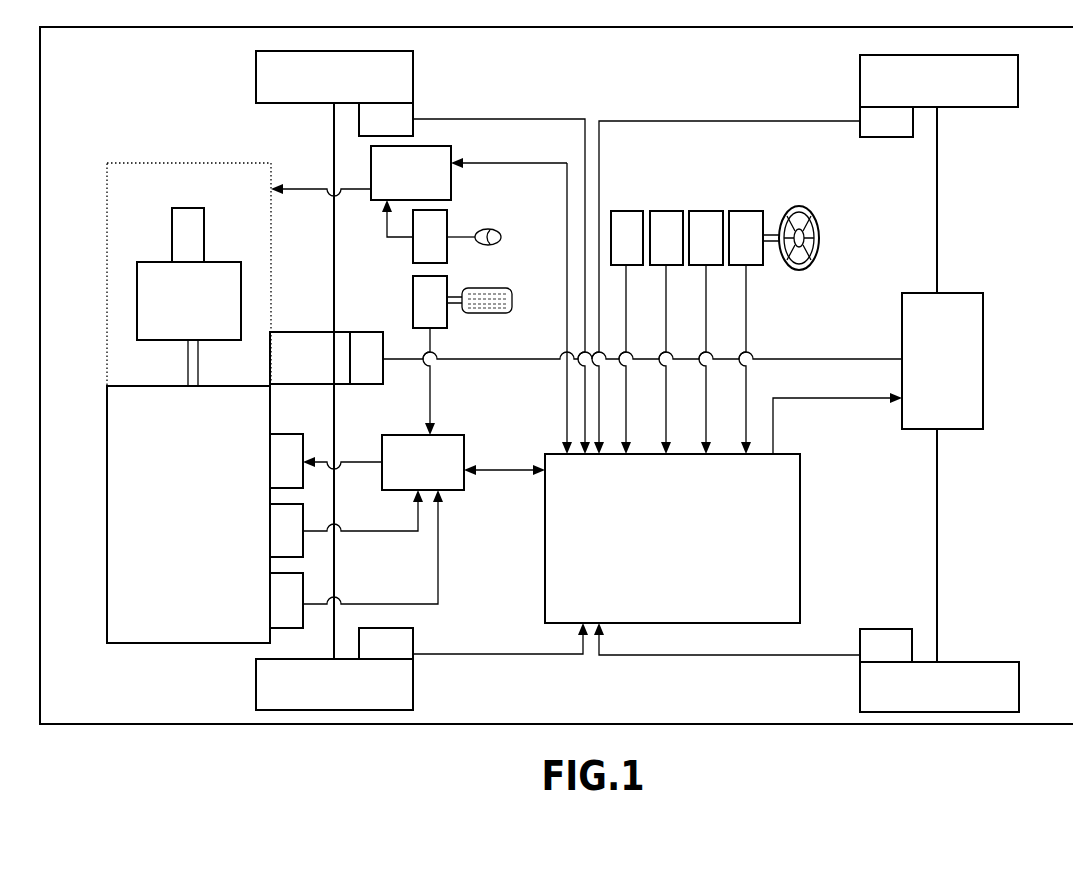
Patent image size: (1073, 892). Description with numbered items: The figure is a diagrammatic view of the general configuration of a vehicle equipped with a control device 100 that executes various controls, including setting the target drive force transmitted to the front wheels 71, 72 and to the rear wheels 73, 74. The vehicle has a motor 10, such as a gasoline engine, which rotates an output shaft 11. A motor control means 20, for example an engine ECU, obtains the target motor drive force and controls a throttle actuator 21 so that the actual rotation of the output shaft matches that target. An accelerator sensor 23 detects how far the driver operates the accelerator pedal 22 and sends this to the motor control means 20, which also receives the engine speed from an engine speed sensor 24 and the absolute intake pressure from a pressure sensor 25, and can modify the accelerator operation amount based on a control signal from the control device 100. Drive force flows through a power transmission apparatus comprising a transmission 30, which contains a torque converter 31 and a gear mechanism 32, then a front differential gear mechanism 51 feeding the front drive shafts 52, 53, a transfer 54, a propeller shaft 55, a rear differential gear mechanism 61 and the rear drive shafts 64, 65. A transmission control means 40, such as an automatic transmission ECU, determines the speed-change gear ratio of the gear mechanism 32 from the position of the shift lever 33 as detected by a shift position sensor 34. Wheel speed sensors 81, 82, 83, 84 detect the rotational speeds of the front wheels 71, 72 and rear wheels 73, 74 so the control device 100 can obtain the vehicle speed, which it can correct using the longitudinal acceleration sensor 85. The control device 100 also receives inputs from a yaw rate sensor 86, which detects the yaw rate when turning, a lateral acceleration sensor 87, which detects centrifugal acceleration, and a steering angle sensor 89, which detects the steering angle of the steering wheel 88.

The motor 10 is at (190, 645).
The output shaft 11 is at (190, 370).
The motor control means 20 is at (447, 433).
The throttle actuator 21 is at (300, 433).
The accelerator pedal 22 is at (512, 300).
The accelerator sensor 23 is at (447, 276).
The engine speed sensor 24 is at (300, 503).
The pressure sensor 25 is at (300, 573).
The transmission 30 is at (221, 162).
The torque converter 31 is at (220, 260).
The gear mechanism 32 is at (172, 237).
The shift lever 33 is at (501, 237).
The shift position sensor 34 is at (447, 212).
The transmission control means 40 is at (451, 147).
The front differential gear mechanism 51 is at (313, 330).
The front drive shaft 52 is at (334, 309).
The front drive shaft 53 is at (334, 426).
The transfer 54 is at (383, 338).
The propeller shaft 55 is at (486, 357).
The rear differential gear mechanism 61 is at (975, 292).
The rear drive shaft 64 is at (937, 242).
The rear drive shaft 65 is at (937, 477).
The front wheel 71 is at (413, 66).
The front wheel 72 is at (413, 686).
The rear wheel 73 is at (960, 107).
The rear wheel 74 is at (970, 662).
The wheel speed sensor 81 is at (413, 107).
The wheel speed sensor 82 is at (413, 636).
The wheel speed sensor 83 is at (882, 137).
The wheel speed sensor 84 is at (885, 629).
The longitudinal acceleration sensor 85 is at (627, 210).
The yaw rate sensor 86 is at (667, 210).
The lateral acceleration sensor 87 is at (707, 210).
The steering wheel 88 is at (820, 237).
The steering angle sensor 89 is at (747, 210).
The control device 100 is at (800, 532).